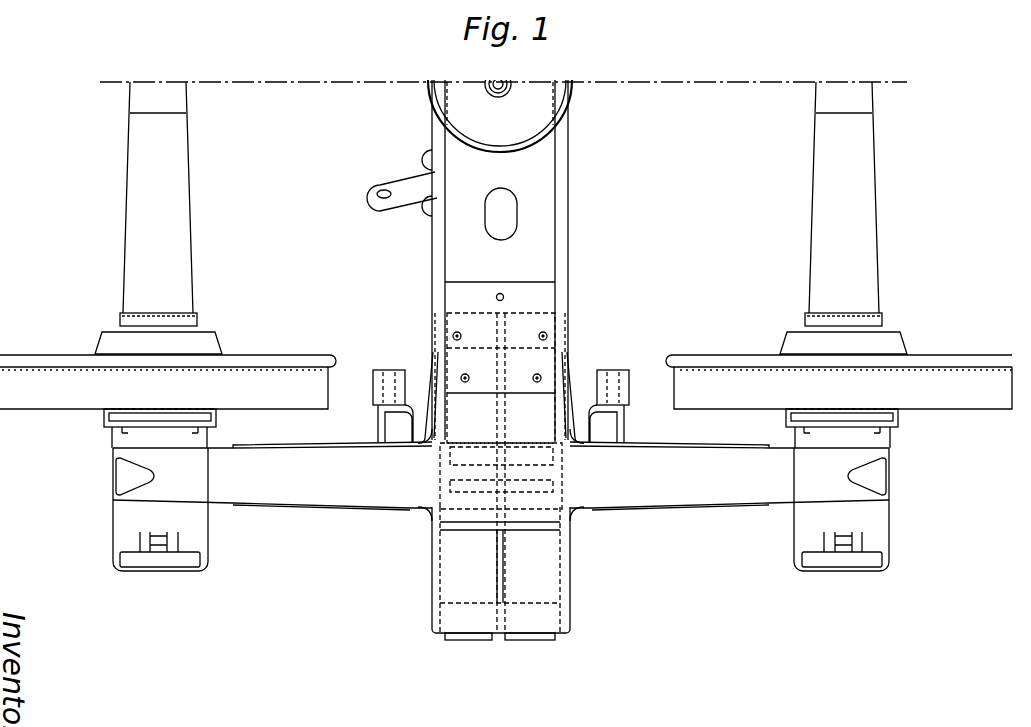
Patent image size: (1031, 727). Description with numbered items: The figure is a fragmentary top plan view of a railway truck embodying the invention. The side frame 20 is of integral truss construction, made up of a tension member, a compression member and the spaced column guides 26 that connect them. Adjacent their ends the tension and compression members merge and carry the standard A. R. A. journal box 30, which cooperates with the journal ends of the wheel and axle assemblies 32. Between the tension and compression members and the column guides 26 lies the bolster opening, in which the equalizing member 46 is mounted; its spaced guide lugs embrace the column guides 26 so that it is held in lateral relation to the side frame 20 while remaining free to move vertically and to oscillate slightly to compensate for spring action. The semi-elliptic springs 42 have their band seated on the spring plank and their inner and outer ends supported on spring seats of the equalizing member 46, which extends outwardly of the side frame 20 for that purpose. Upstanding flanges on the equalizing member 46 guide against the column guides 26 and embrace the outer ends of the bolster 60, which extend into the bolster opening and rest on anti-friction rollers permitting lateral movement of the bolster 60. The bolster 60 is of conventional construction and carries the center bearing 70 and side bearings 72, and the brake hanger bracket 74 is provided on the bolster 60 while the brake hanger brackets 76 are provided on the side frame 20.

The side frame 20 is at (352, 493).
The column guides 26 is at (578, 477).
The journal box 30 is at (203, 531).
The wheel and axle assemblies 32 is at (285, 366).
The semi-elliptic springs 42 is at (490, 640).
The equalizing member 46 is at (548, 570).
The bolster 60 is at (545, 232).
The center bearing 70 is at (540, 103).
The side bearings 72 is at (527, 360).
The brake hanger bracket 74 is at (372, 199).
The brake hanger brackets 76 is at (387, 368).